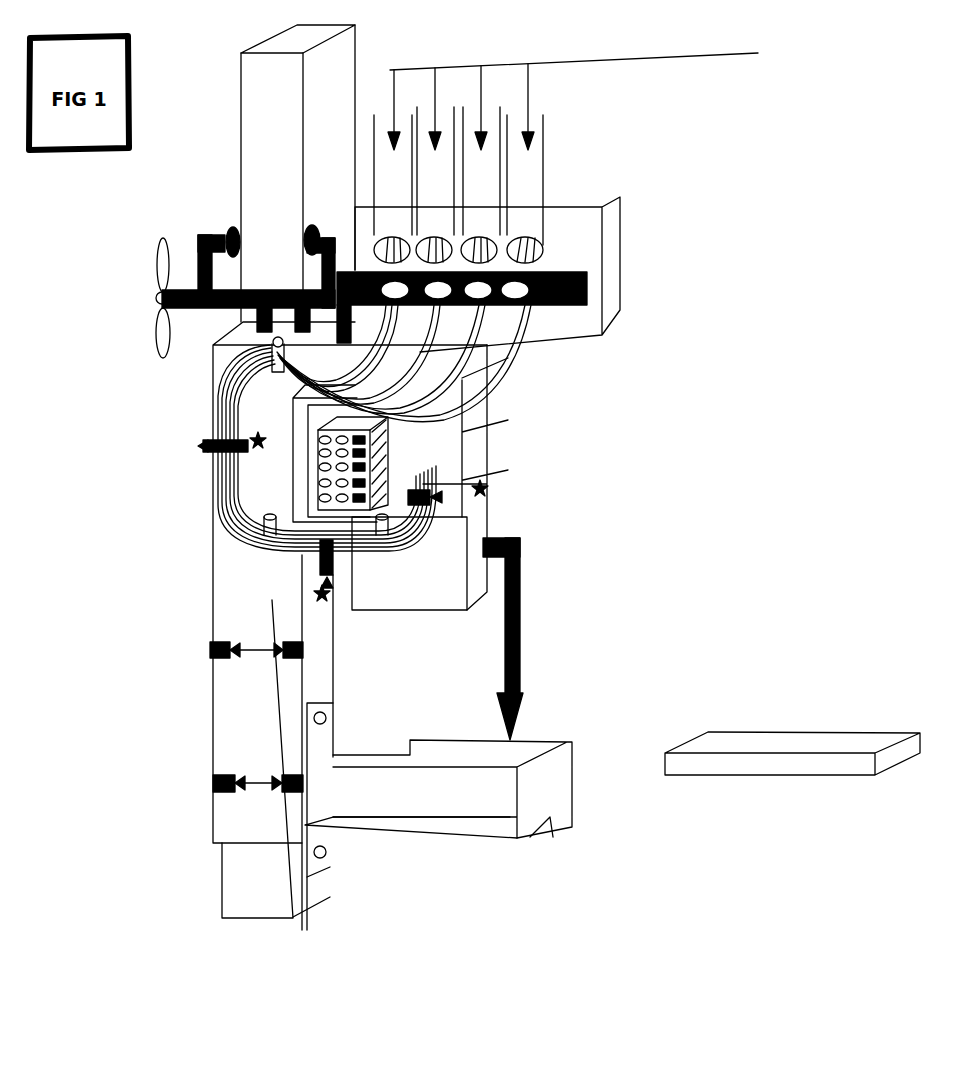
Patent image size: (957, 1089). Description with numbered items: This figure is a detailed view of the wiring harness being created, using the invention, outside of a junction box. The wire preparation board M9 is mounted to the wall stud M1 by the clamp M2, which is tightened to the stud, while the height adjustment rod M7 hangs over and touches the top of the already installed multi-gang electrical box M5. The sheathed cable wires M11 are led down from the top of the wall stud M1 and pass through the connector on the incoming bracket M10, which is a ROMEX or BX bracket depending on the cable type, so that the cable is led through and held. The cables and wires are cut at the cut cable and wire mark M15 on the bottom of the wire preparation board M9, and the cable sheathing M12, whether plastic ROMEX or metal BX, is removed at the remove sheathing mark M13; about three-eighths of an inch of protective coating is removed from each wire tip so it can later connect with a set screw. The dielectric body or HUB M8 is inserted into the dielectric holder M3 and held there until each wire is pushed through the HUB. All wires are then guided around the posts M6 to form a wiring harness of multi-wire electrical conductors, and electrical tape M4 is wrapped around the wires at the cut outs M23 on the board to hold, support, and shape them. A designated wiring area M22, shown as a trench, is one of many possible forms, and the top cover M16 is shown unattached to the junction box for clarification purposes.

The wall stud M1 is at (272, 175).
The clamp M2 is at (166, 298).
The dielectric holder M3 is at (235, 403).
The electrical tape M4 is at (200, 450).
The multi-gang electrical box M5 is at (430, 838).
The posts M6 is at (372, 522).
The height adjustment rod M7 is at (522, 653).
The dielectric body or HUB M8 is at (362, 424).
The wire preparation board M9 is at (470, 372).
The incoming bracket M10 is at (586, 288).
The sheathed cable wires M11 is at (619, 91).
The cable sheathing M12 is at (543, 135).
The remove sheathing mark M13 is at (213, 648).
The cut cable and wire mark M15 is at (213, 793).
The top cover M16 is at (822, 775).
The designated wiring area M22 is at (557, 827).
The cut outs for taping wires M23 is at (478, 494).